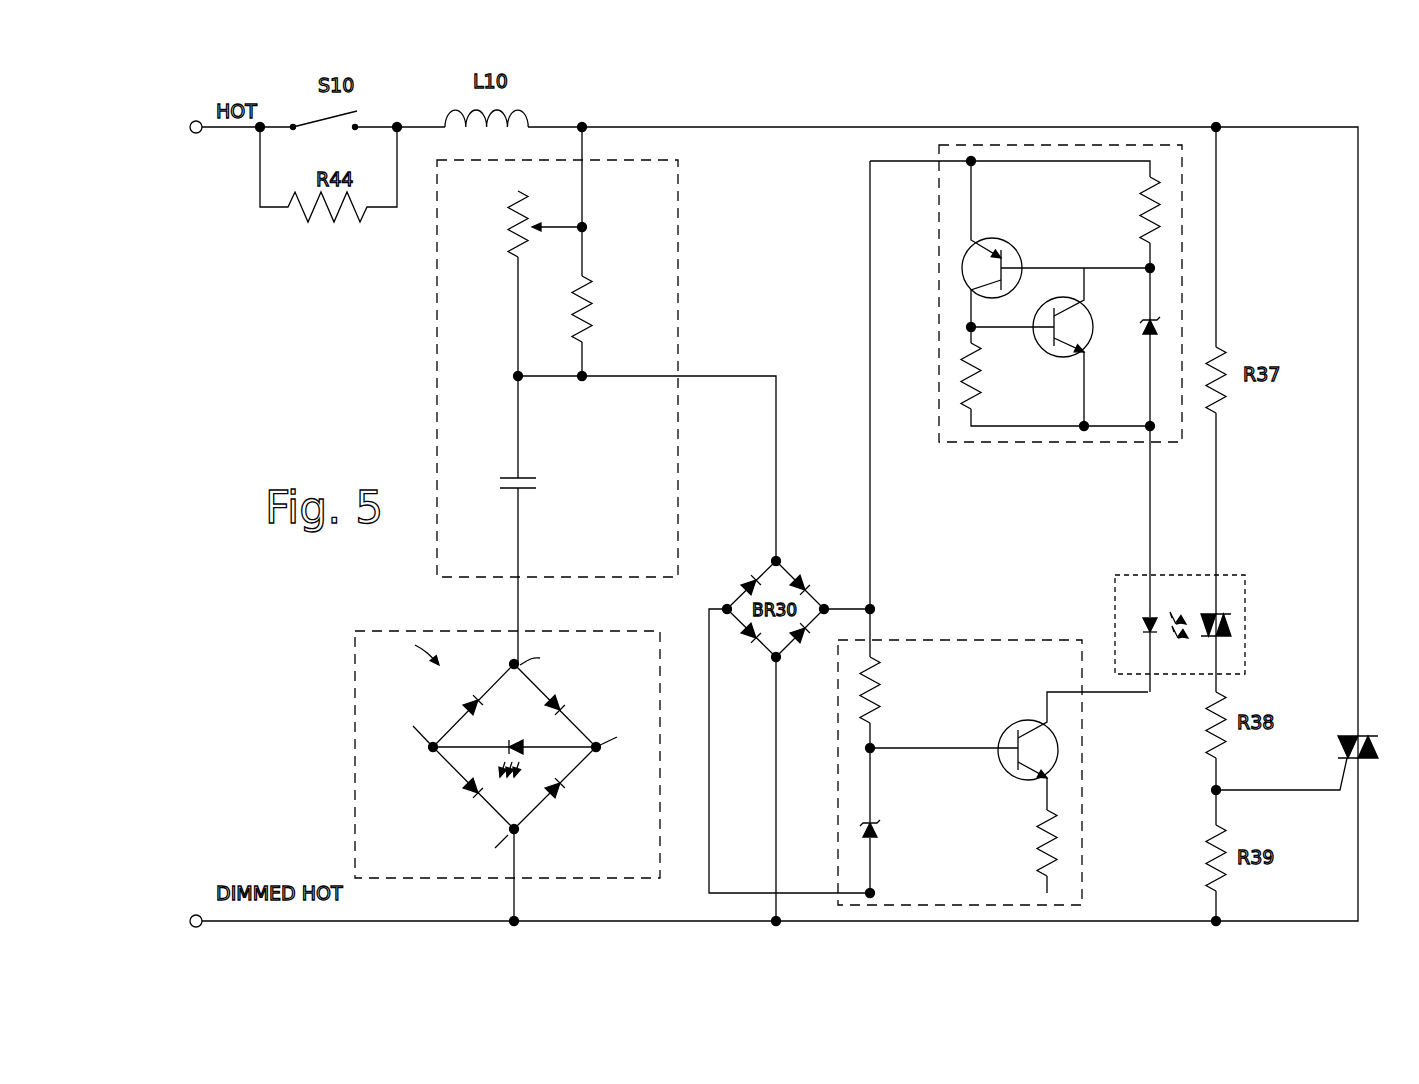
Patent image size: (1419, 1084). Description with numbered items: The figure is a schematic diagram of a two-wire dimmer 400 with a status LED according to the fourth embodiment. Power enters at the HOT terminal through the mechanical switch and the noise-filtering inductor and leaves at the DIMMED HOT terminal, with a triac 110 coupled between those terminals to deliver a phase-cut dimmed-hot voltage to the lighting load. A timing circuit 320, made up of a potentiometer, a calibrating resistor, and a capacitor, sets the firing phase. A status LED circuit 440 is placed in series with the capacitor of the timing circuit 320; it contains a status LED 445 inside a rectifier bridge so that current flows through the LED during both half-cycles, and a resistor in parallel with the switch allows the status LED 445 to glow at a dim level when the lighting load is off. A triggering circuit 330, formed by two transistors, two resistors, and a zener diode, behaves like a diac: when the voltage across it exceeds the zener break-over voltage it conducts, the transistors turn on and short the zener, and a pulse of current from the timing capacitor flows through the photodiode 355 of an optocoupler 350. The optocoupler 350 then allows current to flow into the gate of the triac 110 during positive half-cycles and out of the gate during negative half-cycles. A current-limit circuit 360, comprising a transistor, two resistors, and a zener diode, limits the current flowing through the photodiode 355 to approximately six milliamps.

The two-wire dimmer 400 is at (899, 95).
The timing circuit 320 is at (435, 258).
The triggering circuit 330 is at (1027, 444).
The current-limit circuit 360 is at (998, 640).
The photodiode 355 is at (1140, 618).
The optocoupler 350 is at (1176, 628).
The triac 110 is at (1350, 735).
The status LED circuit 440 is at (455, 776).
The status LED 445 is at (520, 752).